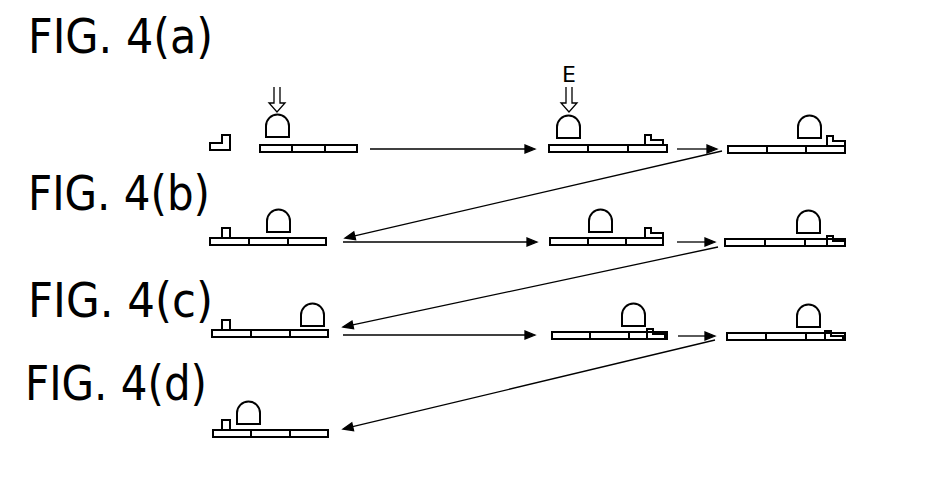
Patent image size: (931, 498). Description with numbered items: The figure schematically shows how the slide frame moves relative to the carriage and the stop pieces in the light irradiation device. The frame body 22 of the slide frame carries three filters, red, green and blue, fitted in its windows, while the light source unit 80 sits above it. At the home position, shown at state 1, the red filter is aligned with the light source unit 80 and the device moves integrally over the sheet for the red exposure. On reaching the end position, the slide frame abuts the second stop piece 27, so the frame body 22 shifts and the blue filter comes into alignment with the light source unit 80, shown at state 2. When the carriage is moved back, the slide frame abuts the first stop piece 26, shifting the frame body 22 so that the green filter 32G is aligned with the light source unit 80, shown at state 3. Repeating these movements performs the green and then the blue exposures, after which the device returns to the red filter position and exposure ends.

The home position state 1 is at (299, 113).
The end position state 2 is at (827, 110).
The green filter selection state 3 is at (312, 220).
The frame body 22 is at (342, 134).
The first stop piece 26 is at (221, 142).
The second stop piece 27 is at (658, 137).
The light source unit 80 is at (266, 125).
The green filter 32G is at (271, 246).